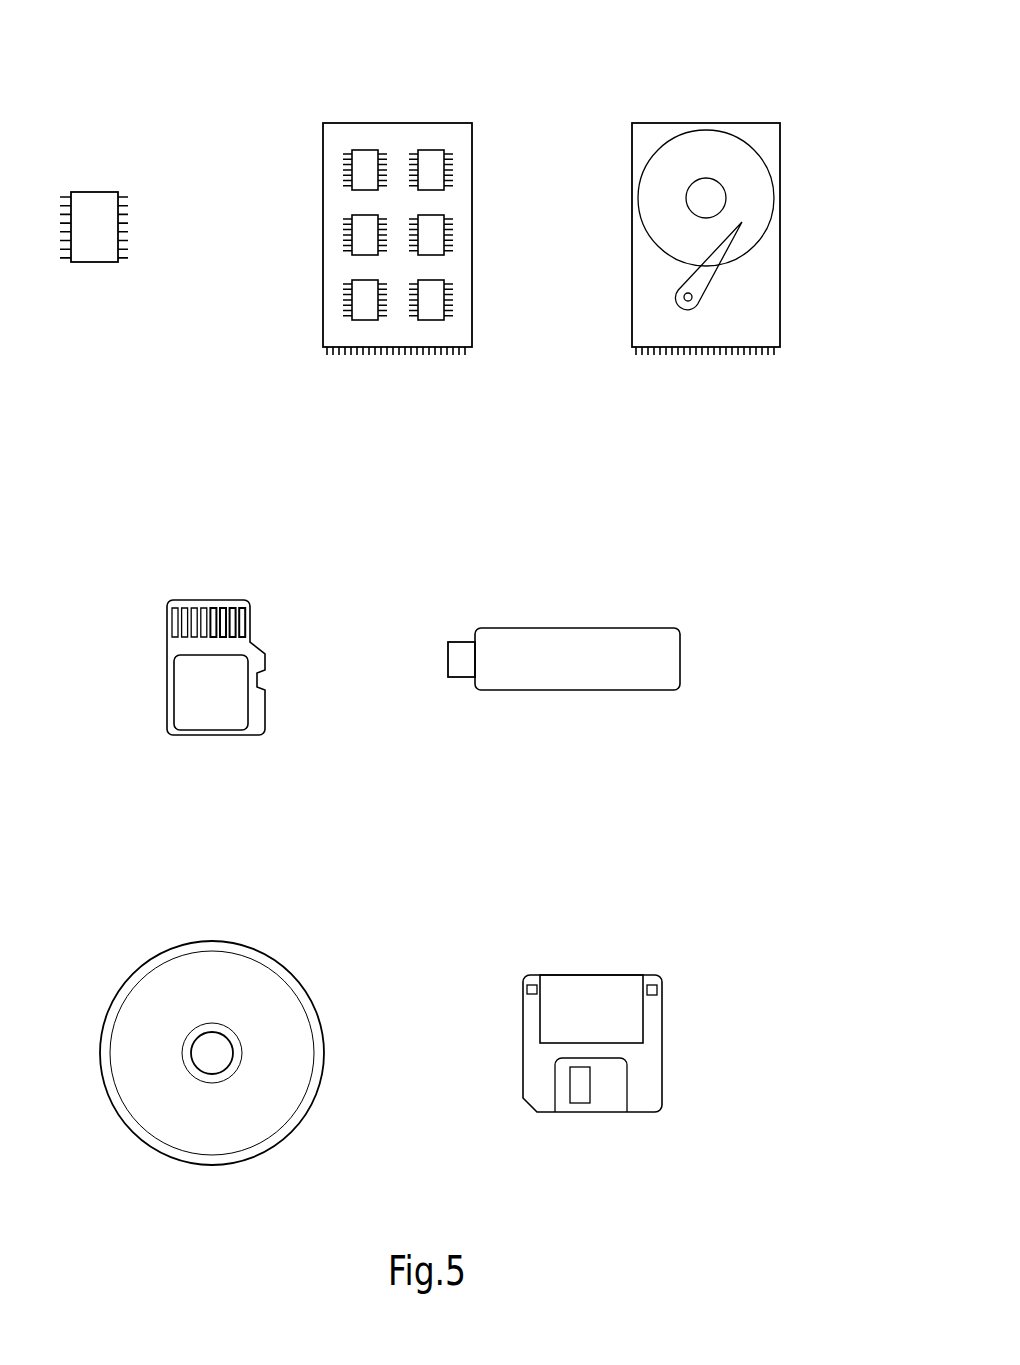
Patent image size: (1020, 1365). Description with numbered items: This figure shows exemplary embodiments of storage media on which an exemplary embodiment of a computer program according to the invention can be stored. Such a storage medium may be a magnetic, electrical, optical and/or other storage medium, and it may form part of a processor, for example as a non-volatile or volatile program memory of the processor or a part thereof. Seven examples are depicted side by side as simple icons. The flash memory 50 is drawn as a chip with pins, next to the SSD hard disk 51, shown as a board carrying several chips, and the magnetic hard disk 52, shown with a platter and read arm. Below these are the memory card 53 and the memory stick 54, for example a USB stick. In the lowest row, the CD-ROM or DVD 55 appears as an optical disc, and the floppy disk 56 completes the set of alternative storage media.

The flash memory 50 is at (141, 136).
The SSD hard disk 51 is at (494, 67).
The magnetic hard disk 52 is at (802, 67).
The memory card 53 is at (275, 542).
The memory stick 54 is at (692, 572).
The CD-ROM or DVD 55 is at (309, 914).
The floppy disk 56 is at (670, 919).